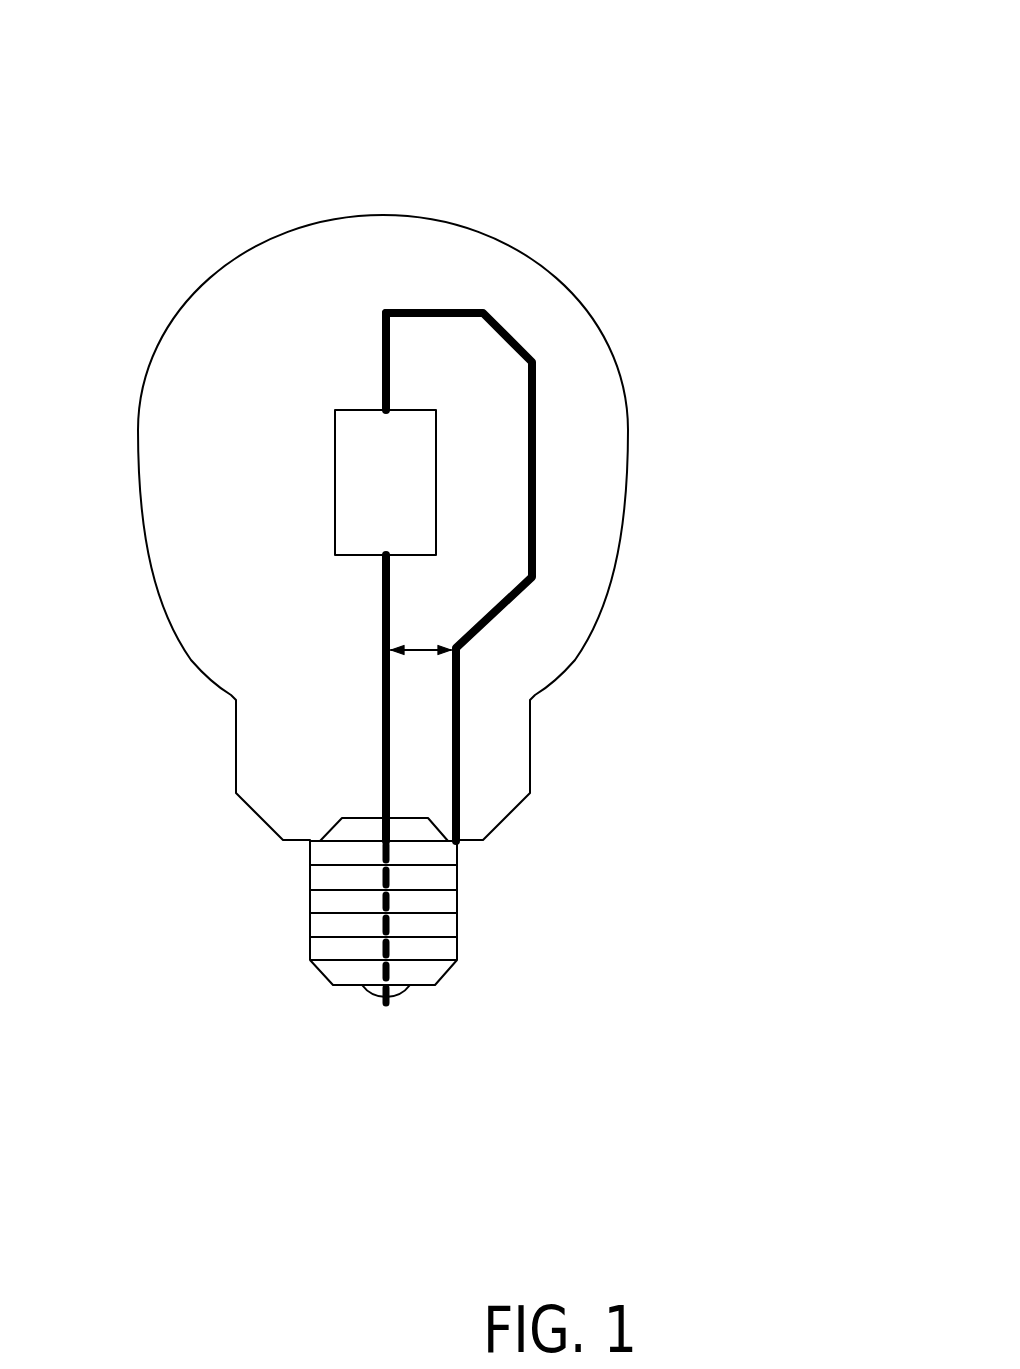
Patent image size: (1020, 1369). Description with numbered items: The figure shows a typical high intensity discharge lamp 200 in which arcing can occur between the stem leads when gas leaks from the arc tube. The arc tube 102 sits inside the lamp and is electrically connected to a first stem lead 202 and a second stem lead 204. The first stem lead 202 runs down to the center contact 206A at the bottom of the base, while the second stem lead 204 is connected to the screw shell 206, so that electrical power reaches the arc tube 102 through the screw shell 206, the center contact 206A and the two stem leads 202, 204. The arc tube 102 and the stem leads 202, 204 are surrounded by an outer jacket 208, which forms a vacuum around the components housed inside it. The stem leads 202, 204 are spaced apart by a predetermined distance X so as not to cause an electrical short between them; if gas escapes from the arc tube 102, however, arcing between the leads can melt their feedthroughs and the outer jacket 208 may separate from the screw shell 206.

The HID lamp 200 is at (630, 88).
The outer jacket 208 is at (612, 330).
The arc tube 102 is at (330, 455).
The first stem lead 202 is at (382, 746).
The second stem lead 204 is at (461, 743).
The predetermined distance X is at (575, 561).
The screw shell 206 is at (461, 889).
The center contact 206A is at (386, 1006).